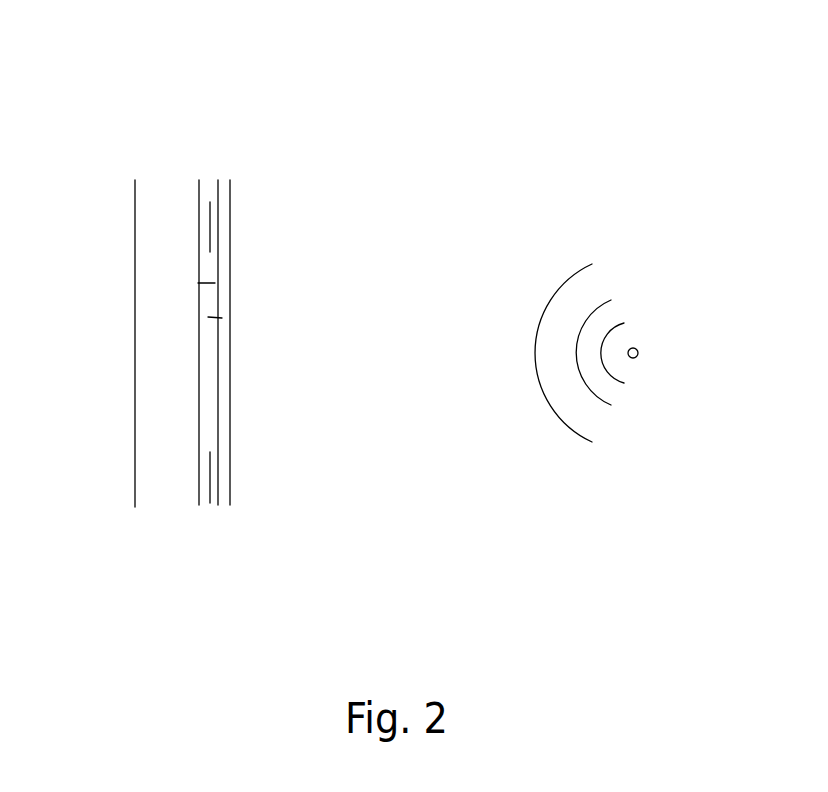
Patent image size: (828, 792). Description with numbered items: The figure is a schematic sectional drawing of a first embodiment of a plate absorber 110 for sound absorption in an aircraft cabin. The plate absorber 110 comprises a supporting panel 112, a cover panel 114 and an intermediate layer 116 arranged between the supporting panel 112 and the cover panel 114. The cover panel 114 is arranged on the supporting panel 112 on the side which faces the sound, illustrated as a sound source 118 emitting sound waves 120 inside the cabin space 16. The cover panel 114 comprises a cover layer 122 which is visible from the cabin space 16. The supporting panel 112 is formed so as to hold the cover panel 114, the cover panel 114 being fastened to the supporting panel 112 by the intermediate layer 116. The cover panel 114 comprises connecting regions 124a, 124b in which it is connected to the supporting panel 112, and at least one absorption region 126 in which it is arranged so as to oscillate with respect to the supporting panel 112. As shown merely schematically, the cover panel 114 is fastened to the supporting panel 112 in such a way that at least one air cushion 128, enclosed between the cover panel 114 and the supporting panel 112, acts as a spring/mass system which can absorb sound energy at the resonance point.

The plate absorber 110 is at (97, 582).
The supporting panel 112 is at (171, 203).
The cover panel 114 is at (224, 180).
The intermediate layer 116 is at (205, 180).
The sound source 118 is at (640, 352).
The sound waves 120 is at (552, 300).
The cover layer 122 is at (230, 370).
The connecting region 124a is at (208, 230).
The connecting region 124b is at (210, 477).
The absorption region 126 is at (213, 283).
The air cushion 128 is at (222, 318).
The cabin space 16 is at (393, 337).